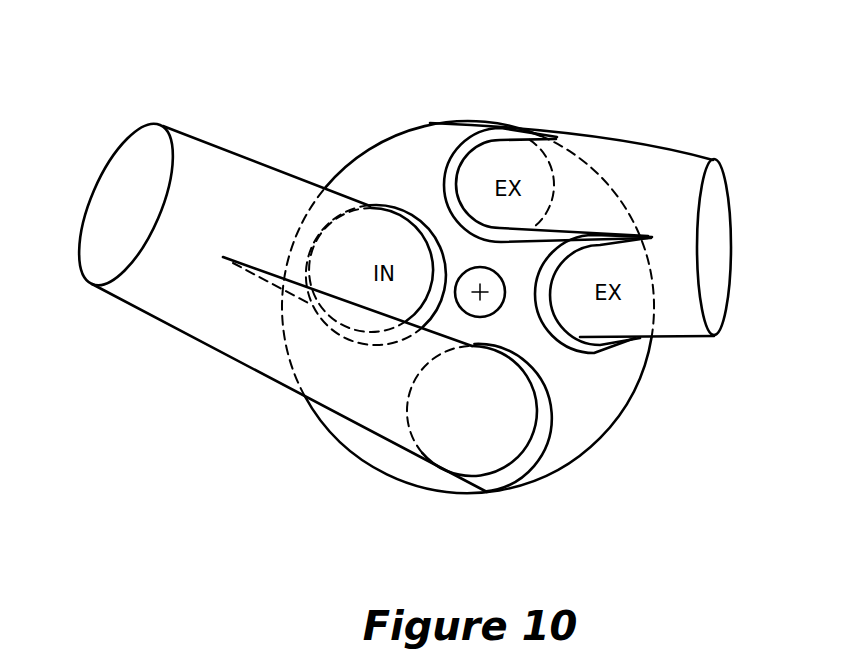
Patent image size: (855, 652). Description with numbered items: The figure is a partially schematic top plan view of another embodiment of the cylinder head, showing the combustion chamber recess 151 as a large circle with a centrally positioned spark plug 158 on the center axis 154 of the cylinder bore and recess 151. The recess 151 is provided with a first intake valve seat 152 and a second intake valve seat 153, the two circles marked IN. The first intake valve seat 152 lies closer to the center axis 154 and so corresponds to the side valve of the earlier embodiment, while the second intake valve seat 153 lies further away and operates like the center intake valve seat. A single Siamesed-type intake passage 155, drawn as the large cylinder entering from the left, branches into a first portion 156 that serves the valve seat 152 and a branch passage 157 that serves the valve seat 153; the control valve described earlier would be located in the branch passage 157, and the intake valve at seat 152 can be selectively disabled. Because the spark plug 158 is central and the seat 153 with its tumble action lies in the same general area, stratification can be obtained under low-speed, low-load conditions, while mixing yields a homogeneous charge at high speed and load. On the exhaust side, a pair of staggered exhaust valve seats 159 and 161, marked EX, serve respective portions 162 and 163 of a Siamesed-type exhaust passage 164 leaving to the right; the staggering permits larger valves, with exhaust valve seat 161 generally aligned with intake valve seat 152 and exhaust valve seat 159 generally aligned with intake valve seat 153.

The combustion chamber recess 151 is at (400, 128).
The first intake valve seat 152 is at (413, 443).
The second intake valve seat 153 is at (340, 210).
The center axis 154 is at (480, 293).
The Siamesed-type intake passage 155 is at (118, 203).
The first portion of intake passage 156 is at (211, 347).
The branch passage 157 is at (209, 151).
The spark plug 158 is at (474, 267).
The exhaust valve seat 159 is at (633, 315).
The exhaust valve seat 161 is at (555, 187).
The exhaust passage portion 162 is at (664, 337).
The exhaust passage portion 163 is at (656, 147).
The Siamesed-type exhaust passage 164 is at (718, 237).